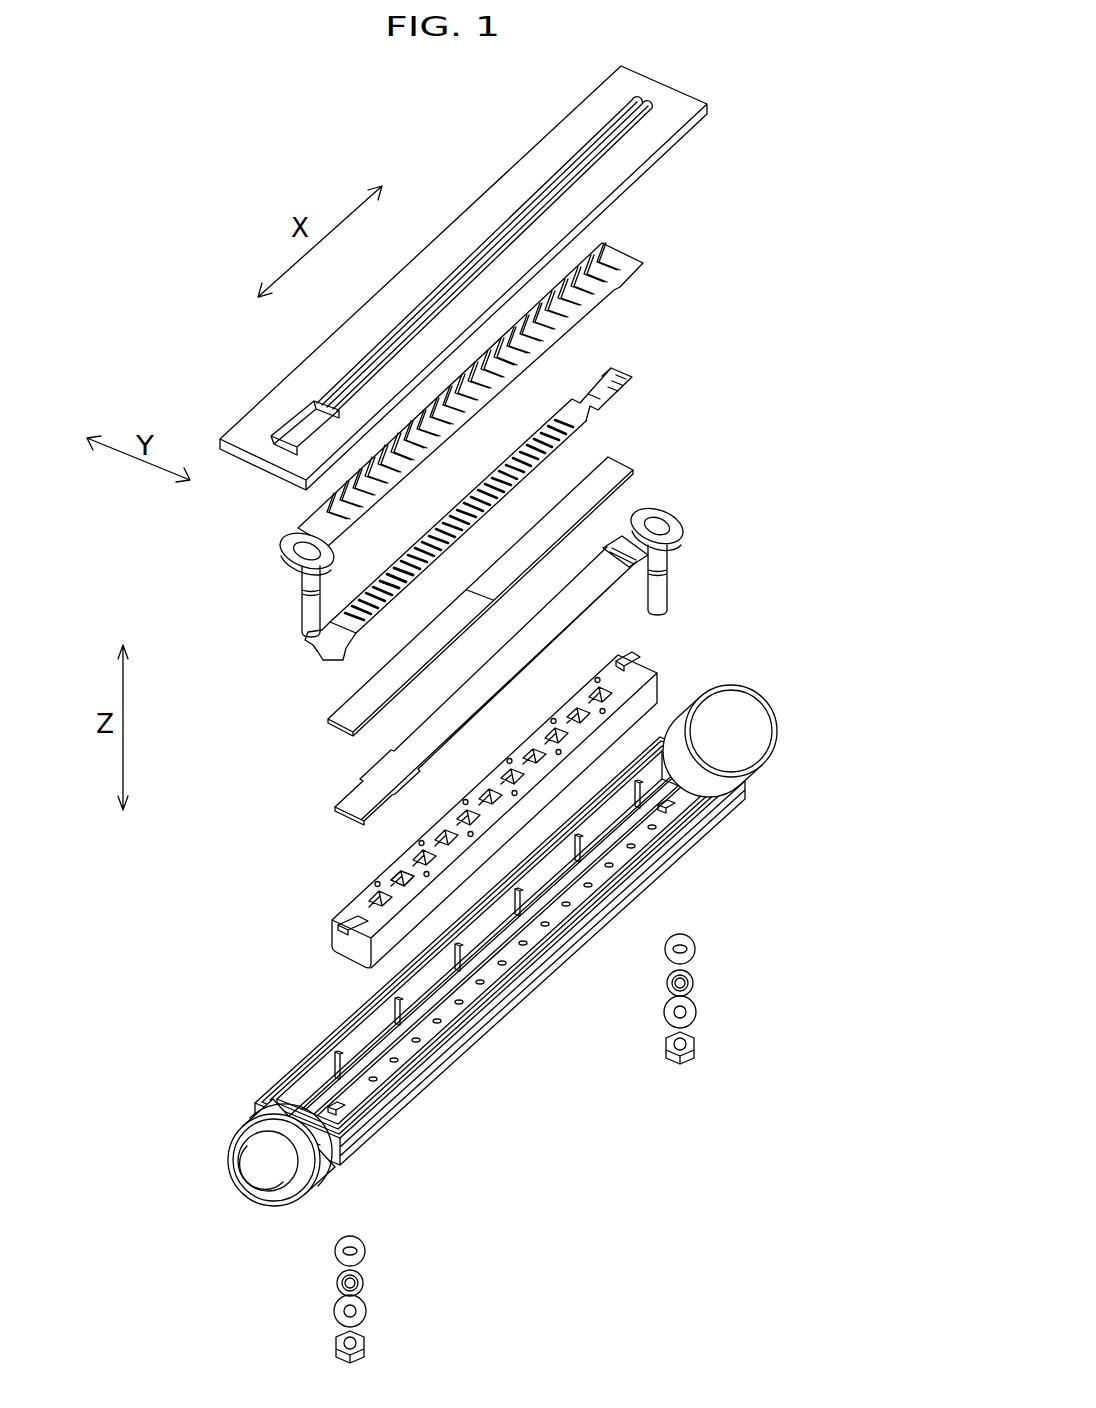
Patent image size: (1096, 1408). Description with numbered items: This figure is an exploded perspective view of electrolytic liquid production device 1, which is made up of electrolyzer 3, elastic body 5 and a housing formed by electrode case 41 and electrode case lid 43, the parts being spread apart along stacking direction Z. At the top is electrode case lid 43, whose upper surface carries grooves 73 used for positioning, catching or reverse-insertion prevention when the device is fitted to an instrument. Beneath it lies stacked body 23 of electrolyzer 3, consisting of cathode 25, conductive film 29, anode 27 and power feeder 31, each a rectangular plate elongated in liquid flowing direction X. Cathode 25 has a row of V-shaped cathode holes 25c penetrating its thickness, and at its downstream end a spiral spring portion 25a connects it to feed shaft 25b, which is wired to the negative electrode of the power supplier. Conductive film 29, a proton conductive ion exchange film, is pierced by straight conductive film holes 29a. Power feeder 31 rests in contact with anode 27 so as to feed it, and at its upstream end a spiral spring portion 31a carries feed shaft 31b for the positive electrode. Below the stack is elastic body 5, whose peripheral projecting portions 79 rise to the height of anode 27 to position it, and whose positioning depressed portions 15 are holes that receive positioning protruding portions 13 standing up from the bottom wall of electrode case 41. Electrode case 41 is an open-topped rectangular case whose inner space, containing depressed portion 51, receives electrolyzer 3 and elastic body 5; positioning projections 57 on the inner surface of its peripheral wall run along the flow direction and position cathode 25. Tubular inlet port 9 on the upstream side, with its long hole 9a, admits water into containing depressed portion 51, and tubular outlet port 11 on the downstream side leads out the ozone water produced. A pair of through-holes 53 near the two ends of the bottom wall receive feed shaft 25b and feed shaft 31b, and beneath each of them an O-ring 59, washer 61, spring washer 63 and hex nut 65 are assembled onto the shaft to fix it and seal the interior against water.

The electrolytic liquid production device 1 is at (436, 153).
The electrolyzer 3 is at (294, 746).
The elastic body 5 is at (655, 673).
The inlet port 9 is at (745, 702).
The hole 9a is at (692, 777).
The outlet port 11 is at (260, 1158).
The positioning protruding portions 13 is at (457, 1009).
The positioning depressed portions 15 is at (410, 878).
The stacked body 23 is at (750, 518).
The cathode 25 is at (634, 254).
The spiral spring portion 25a is at (281, 551).
The feed shaft 25b is at (303, 612).
The cathode holes 25c is at (410, 437).
The anode 27 is at (621, 456).
The conductive film 29 is at (632, 366).
The conductive film holes 29a is at (393, 568).
The power feeder 31 is at (670, 510).
The spiral spring portion 31a is at (770, 562).
The feed shaft 31b is at (760, 609).
The electrode case 41 is at (707, 832).
The electrode case lid 43 is at (671, 84).
The containing depressed portion 51 is at (507, 939).
The through-holes 53 is at (670, 807).
The positioning projections 57 is at (548, 887).
The O-ring 59 is at (697, 948).
The washer 61 is at (694, 983).
The spring washer 63 is at (697, 1012).
The hex nut 65 is at (695, 1048).
The grooves 73 is at (563, 194).
The projecting portions 79 is at (553, 720).